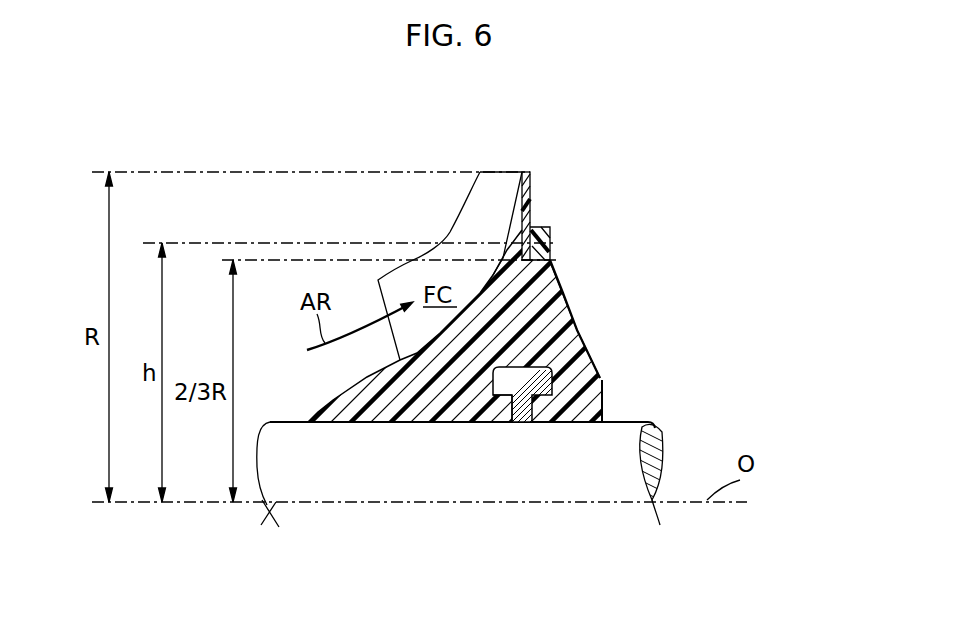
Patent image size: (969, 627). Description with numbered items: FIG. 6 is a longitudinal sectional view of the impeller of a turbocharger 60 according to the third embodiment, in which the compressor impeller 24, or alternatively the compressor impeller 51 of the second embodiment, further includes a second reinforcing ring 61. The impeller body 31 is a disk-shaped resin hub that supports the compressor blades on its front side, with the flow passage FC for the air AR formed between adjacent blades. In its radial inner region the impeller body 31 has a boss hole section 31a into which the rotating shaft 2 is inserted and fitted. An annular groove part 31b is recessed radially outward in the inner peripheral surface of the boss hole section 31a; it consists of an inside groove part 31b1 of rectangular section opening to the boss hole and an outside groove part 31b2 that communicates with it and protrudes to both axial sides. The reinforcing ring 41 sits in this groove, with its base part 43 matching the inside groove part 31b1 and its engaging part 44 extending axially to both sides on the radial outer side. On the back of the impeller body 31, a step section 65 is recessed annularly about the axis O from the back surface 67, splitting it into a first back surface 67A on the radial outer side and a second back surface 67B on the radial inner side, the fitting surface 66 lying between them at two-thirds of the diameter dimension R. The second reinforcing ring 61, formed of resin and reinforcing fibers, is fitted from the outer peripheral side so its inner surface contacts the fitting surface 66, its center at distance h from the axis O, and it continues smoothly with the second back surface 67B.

The turbocharger 60 is at (716, 169).
The back surface 67 is at (616, 275).
The first back surface 67A is at (531, 186).
The second back surface 67B is at (576, 308).
The second reinforcing ring 61 is at (551, 235).
The fitting surface 66 is at (552, 260).
The compressor impeller 24 is at (556, 385).
The compressor impeller 51 is at (668, 250).
The impeller body 31 is at (520, 265).
The step section 65 is at (507, 298).
The boss hole section 31a is at (583, 420).
The annular groove part 31b is at (710, 312).
The inside groove part 31b1 is at (592, 383).
The outside groove part 31b2 is at (543, 367).
The reinforcing ring 41 is at (537, 547).
The base part 43 is at (515, 422).
The engaging part 44 is at (484, 392).
The rotating shaft 2 is at (628, 444).